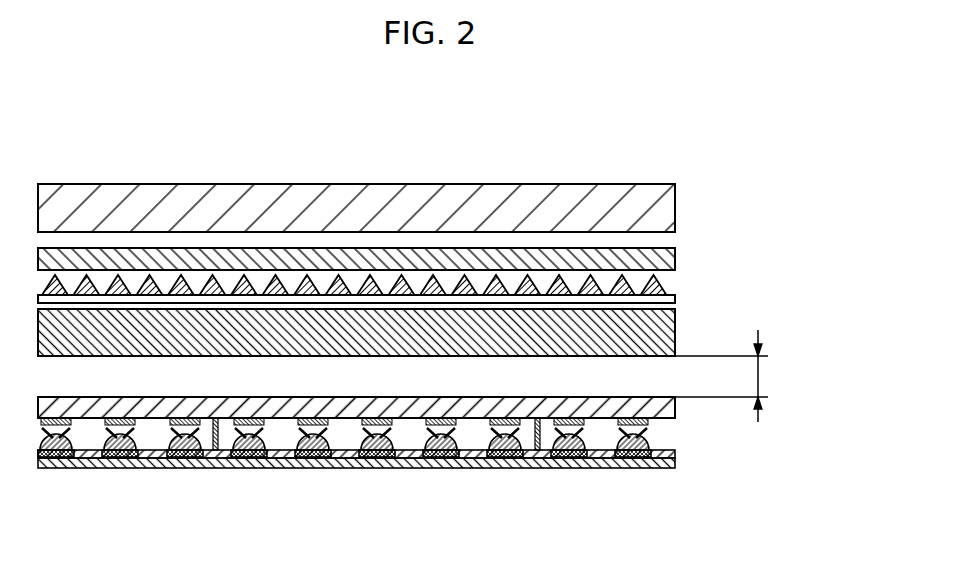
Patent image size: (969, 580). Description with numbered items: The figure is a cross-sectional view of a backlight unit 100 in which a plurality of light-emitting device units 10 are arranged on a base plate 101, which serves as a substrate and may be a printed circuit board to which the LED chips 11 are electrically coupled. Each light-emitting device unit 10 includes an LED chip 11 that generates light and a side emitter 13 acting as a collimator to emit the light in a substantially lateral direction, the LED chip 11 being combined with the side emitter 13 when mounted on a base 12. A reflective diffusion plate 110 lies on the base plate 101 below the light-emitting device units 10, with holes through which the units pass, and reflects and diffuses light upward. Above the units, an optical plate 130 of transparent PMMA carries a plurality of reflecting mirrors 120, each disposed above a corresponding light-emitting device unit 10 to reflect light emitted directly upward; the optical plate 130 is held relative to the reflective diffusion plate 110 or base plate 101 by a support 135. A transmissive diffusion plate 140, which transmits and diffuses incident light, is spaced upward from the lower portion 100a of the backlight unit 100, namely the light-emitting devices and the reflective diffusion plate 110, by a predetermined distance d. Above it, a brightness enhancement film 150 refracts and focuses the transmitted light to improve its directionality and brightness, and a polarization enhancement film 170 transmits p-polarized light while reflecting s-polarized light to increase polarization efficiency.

The backlight unit 100 is at (714, 145).
The lower portion 100a is at (775, 397).
The polarization enhancement film 170 is at (675, 208).
The brightness enhancement film 150 is at (685, 245).
The transmissive diffusion plate 140 is at (675, 329).
The optical plate 130 is at (645, 397).
The reflecting mirror 120 is at (648, 423).
The reflective diffusion plate 110 is at (675, 453).
The base plate 101 is at (675, 466).
The support 135 is at (217, 468).
The light-emitting device unit 10 is at (344, 494).
The LED chip 11 is at (97, 468).
The base 12 is at (125, 468).
The side emitter 13 is at (146, 473).
The predetermined distance d is at (726, 376).